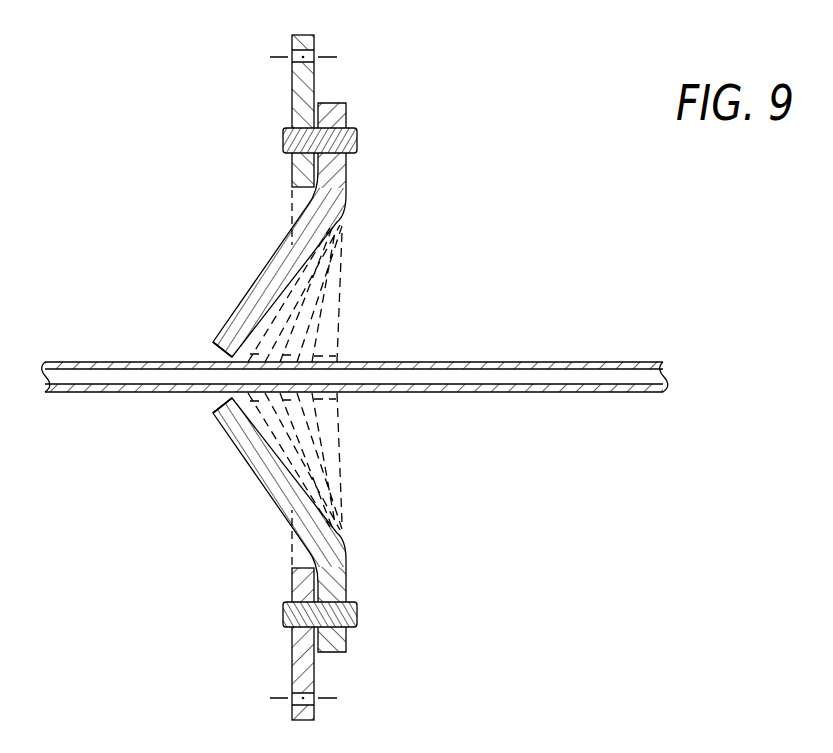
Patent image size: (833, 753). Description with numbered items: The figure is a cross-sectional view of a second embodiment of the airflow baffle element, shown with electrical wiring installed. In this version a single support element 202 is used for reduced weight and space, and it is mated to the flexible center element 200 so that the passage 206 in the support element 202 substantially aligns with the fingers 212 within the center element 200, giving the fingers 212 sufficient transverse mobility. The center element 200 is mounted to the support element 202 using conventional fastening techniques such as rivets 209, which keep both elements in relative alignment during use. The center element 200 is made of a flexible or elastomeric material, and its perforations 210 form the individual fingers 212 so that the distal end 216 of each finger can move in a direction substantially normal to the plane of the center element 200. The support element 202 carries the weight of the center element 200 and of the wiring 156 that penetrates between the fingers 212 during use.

The panel 156 is at (633, 362).
The center element 200 is at (348, 178).
The support element 202 is at (314, 34).
The passage 206 is at (321, 338).
The rivets 209 is at (356, 140).
The perforations 210 is at (362, 278).
The fingers 212 is at (277, 272).
The distal end 216 is at (170, 374).